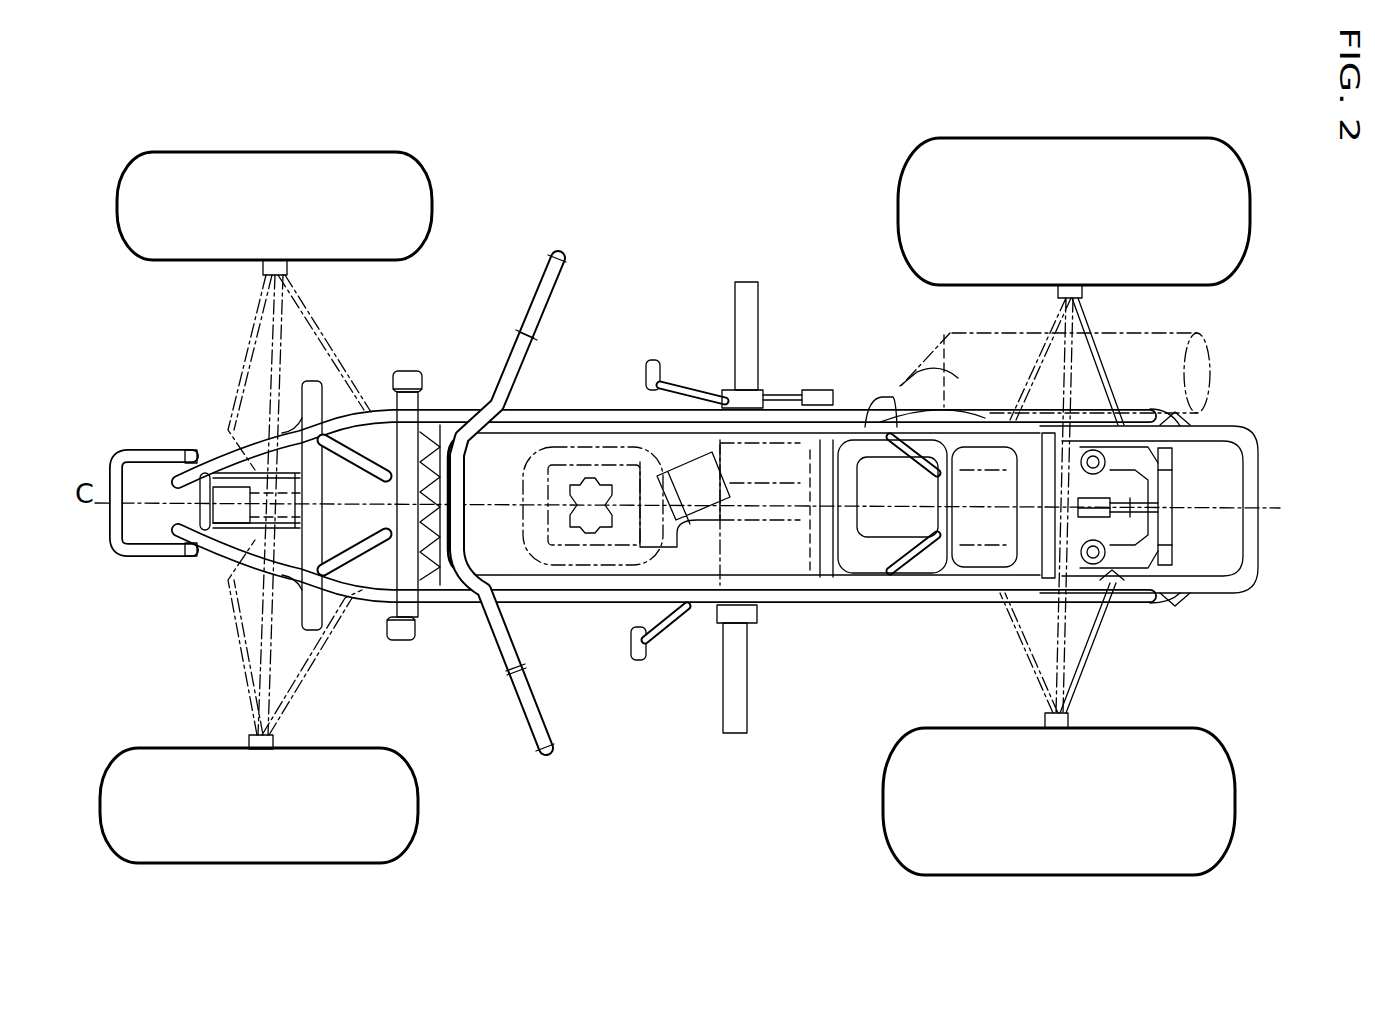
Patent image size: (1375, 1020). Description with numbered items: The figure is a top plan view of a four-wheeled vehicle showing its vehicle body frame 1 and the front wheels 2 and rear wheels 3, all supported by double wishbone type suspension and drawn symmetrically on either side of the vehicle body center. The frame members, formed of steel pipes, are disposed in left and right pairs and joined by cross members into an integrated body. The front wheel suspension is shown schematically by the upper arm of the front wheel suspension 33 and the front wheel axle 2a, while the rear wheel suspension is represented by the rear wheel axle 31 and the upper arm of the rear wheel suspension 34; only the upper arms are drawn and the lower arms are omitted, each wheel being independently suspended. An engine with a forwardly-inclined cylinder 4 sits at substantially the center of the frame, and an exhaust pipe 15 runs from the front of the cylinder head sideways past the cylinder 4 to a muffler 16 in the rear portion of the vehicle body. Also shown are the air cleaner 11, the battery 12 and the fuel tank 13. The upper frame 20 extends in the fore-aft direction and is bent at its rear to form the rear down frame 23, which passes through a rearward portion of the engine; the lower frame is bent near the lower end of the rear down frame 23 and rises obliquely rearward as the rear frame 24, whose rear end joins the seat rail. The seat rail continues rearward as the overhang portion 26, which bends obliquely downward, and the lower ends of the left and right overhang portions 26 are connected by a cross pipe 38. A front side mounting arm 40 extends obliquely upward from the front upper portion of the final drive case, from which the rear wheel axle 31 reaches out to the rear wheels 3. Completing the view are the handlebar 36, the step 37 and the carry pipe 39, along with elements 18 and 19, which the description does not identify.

The vehicle body frame 1 is at (452, 396).
The front wheels 2 is at (200, 227).
The front wheel axle 2a is at (265, 390).
The rear wheels 3 is at (938, 168).
The cylinder 4 is at (600, 585).
The air cleaner 11 is at (995, 582).
The battery 12 is at (820, 597).
The fuel tank 13 is at (533, 575).
The exhaust pipe 15 is at (540, 440).
The muffler 16 is at (917, 372).
The steering shaft 18 is at (390, 372).
The bracket 19 is at (783, 400).
The upper frame 20 is at (645, 430).
The rear down frame 23 is at (973, 437).
The rear frame 24 is at (1150, 583).
The overhang portion 26 is at (1170, 433).
The rear wheel axle 31 is at (1165, 330).
The upper arm of the front wheel suspension 33 is at (247, 355).
The upper arm of the rear wheel suspension 34 is at (1095, 340).
The handlebar 36 is at (528, 295).
The step 37 is at (735, 300).
The cross pipe 38 is at (1172, 490).
The carry pipe 39 is at (1265, 472).
The front side mounting arm 40 is at (1110, 583).